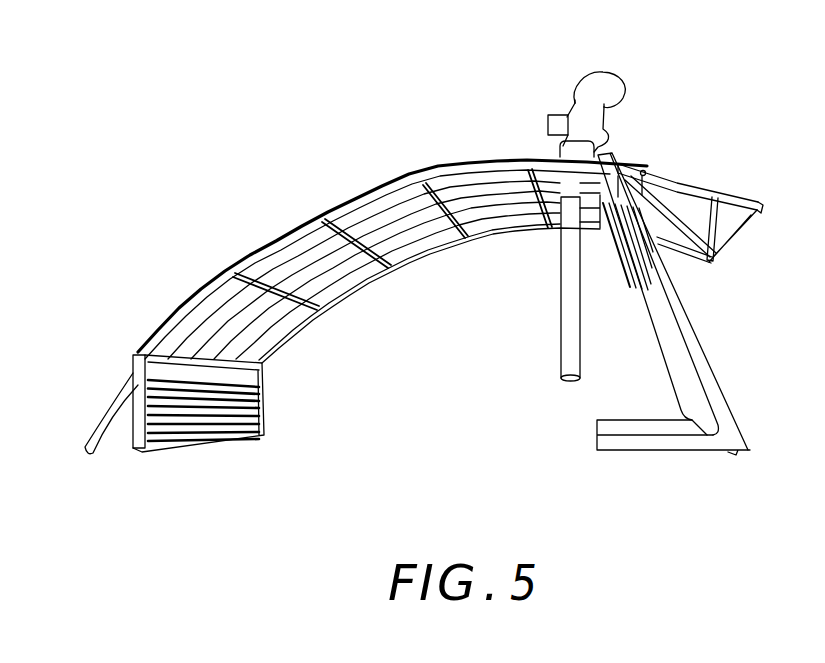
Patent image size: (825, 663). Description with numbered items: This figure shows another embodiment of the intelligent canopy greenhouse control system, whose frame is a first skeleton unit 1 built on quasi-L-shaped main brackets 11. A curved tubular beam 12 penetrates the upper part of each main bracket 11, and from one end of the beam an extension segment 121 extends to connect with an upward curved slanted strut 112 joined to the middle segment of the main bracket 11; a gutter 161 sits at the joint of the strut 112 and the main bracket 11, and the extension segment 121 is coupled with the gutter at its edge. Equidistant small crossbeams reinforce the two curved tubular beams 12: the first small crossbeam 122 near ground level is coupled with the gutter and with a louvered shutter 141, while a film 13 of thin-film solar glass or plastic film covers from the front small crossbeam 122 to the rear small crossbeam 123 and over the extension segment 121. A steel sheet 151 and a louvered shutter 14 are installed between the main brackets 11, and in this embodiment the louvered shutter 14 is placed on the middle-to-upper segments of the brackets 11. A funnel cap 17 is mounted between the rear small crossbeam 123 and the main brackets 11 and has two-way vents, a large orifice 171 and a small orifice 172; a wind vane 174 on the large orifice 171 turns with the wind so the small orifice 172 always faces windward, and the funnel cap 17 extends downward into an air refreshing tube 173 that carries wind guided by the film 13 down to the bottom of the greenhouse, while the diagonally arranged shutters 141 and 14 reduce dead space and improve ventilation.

The first skeleton unit 1 is at (342, 127).
The main bracket 11 is at (690, 337).
The upward curved slanted strut 112 is at (708, 225).
The curved tubular beam 12 is at (180, 308).
The extension segment 121 is at (677, 183).
The first (front) small crossbeam 122 is at (232, 265).
The rear small crossbeam 123 is at (512, 232).
The film 13 is at (318, 207).
The louvered shutter 14 is at (617, 280).
The louvered shutter 141 is at (264, 433).
The steel sheet 151 is at (680, 385).
The gutter 161 is at (761, 203).
The funnel cap 17 is at (560, 141).
The large orifice 171 is at (607, 120).
The small orifice 172 is at (548, 123).
The air refreshing tube 173 is at (562, 363).
The wind vane 174 is at (607, 82).